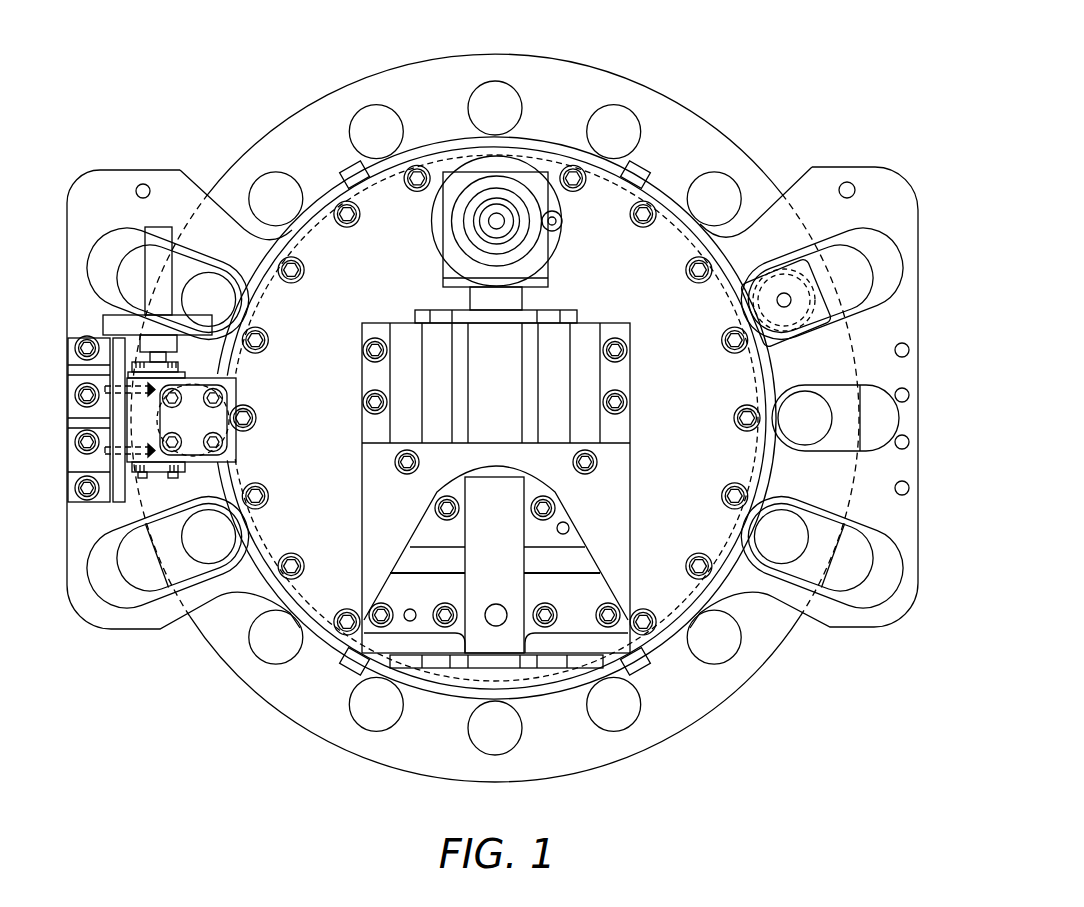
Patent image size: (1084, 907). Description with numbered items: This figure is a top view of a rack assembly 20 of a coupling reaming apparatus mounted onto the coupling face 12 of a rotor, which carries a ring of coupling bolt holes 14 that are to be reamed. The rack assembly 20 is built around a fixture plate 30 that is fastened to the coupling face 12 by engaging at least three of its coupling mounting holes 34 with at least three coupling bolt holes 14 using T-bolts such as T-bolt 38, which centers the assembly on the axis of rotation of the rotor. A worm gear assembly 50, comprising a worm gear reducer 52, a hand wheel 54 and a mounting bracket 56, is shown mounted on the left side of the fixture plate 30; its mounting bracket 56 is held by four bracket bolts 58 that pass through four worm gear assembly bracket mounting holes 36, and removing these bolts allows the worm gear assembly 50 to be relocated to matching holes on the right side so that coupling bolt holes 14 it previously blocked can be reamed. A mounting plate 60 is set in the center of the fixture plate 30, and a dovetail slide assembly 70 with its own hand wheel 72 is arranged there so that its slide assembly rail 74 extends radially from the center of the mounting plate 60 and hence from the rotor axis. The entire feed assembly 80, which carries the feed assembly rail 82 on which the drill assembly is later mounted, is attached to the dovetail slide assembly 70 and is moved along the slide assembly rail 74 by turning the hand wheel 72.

The coupling face 12 is at (556, 58).
The coupling bolt holes 14 is at (628, 120).
The rack assembly 20 is at (93, 180).
The fixture plate 30 is at (902, 180).
The coupling mounting holes 34 is at (884, 428).
The worm gear assembly bracket mounting holes 36 is at (895, 351).
The T-bolt 38 is at (847, 297).
The worm gear assembly 50 is at (140, 476).
The worm gear reducer 52 is at (236, 462).
The hand wheel 54 is at (182, 333).
The mounting bracket 56 is at (105, 505).
The bracket bolts 58 is at (85, 338).
The mounting plate 60 is at (296, 531).
The dovetail slide assembly 70 is at (483, 388).
The hand wheel 72 is at (545, 248).
The slide assembly rail 74 is at (553, 380).
The feed assembly 80 is at (484, 553).
The feed assembly rail 82 is at (587, 558).